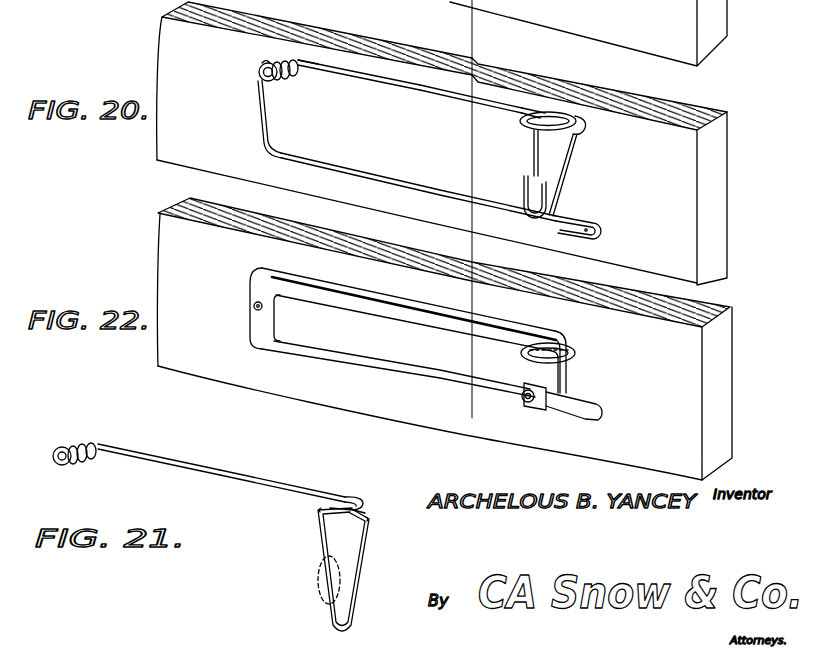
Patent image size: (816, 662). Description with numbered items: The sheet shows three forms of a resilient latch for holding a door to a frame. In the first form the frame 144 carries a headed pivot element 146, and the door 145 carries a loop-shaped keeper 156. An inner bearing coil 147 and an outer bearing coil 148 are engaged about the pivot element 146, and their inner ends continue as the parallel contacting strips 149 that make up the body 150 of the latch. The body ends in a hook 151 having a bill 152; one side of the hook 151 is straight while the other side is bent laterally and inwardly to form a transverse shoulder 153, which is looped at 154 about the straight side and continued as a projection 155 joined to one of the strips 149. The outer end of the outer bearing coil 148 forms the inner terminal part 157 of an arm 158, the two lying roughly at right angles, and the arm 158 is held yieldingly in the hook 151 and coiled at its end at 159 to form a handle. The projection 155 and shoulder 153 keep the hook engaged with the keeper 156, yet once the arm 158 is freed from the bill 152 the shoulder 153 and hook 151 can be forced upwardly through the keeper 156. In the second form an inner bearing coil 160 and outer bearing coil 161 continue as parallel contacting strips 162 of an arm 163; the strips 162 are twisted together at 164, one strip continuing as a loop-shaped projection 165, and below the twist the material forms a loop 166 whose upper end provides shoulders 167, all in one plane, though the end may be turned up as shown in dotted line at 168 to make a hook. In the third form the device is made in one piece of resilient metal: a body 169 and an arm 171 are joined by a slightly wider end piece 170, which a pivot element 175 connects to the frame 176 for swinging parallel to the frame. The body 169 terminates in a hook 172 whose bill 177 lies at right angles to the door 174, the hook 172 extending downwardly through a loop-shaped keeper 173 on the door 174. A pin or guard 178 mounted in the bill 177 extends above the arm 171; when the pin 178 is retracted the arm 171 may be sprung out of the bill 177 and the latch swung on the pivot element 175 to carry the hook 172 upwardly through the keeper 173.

In FIG. 20, the frame 144 is at (159, 141).
In FIG. 20, the door 145 is at (722, 207).
In FIG. 20, the headed pivot element 146 is at (276, 82).
In FIG. 20, the inner bearing coil 147 is at (295, 58).
In FIG. 20, the outer bearing coil 148 is at (266, 58).
In FIG. 20, the parallel contacting strips 149 is at (428, 86).
In FIG. 20, the body of the latch 150 is at (375, 79).
In FIG. 20, the hook 151 is at (533, 163).
In FIG. 20, the bill 152 is at (556, 184).
In FIG. 20, the transverse shoulder 153 is at (560, 175).
In FIG. 20, the loop 154 is at (520, 123).
In FIG. 20, the projection 155 is at (568, 115).
In FIG. 20, the loop-shaped keeper 156 is at (581, 122).
In FIG. 20, the inner terminal part of the arm 157 is at (262, 100).
In FIG. 20, the arm 158 is at (340, 167).
In FIG. 20, the coiled end forming a handle 159 is at (586, 224).
In FIG. 21, the inner bearing coil 160 is at (86, 456).
In FIG. 21, the outer bearing coil 161 is at (70, 466).
In FIG. 21, the parallel contacting strips 162 is at (224, 476).
In FIG. 21, the arm 163 is at (193, 462).
In FIG. 21, the twist 164 is at (344, 494).
In FIG. 21, the loop-shaped projection 165 is at (363, 501).
In FIG. 21, the loop 166 is at (362, 548).
In FIG. 21, the shoulders 167 is at (368, 521).
In FIG. 21, the turned-up end of the loop 168 is at (318, 575).
In FIG. 22, the body 169 is at (410, 314).
In FIG. 22, the end piece 170 is at (265, 324).
In FIG. 22, the arm 171 is at (461, 385).
In FIG. 22, the hook 172 is at (568, 384).
In FIG. 22, the loop-shaped keeper 173 is at (576, 354).
In FIG. 22, the door 174 is at (724, 410).
In FIG. 22, the pivot element 175 is at (254, 305).
In FIG. 22, the frame 176 is at (160, 244).
In FIG. 22, the bill 177 is at (538, 412).
In FIG. 22, the pin or guard 178 is at (527, 402).